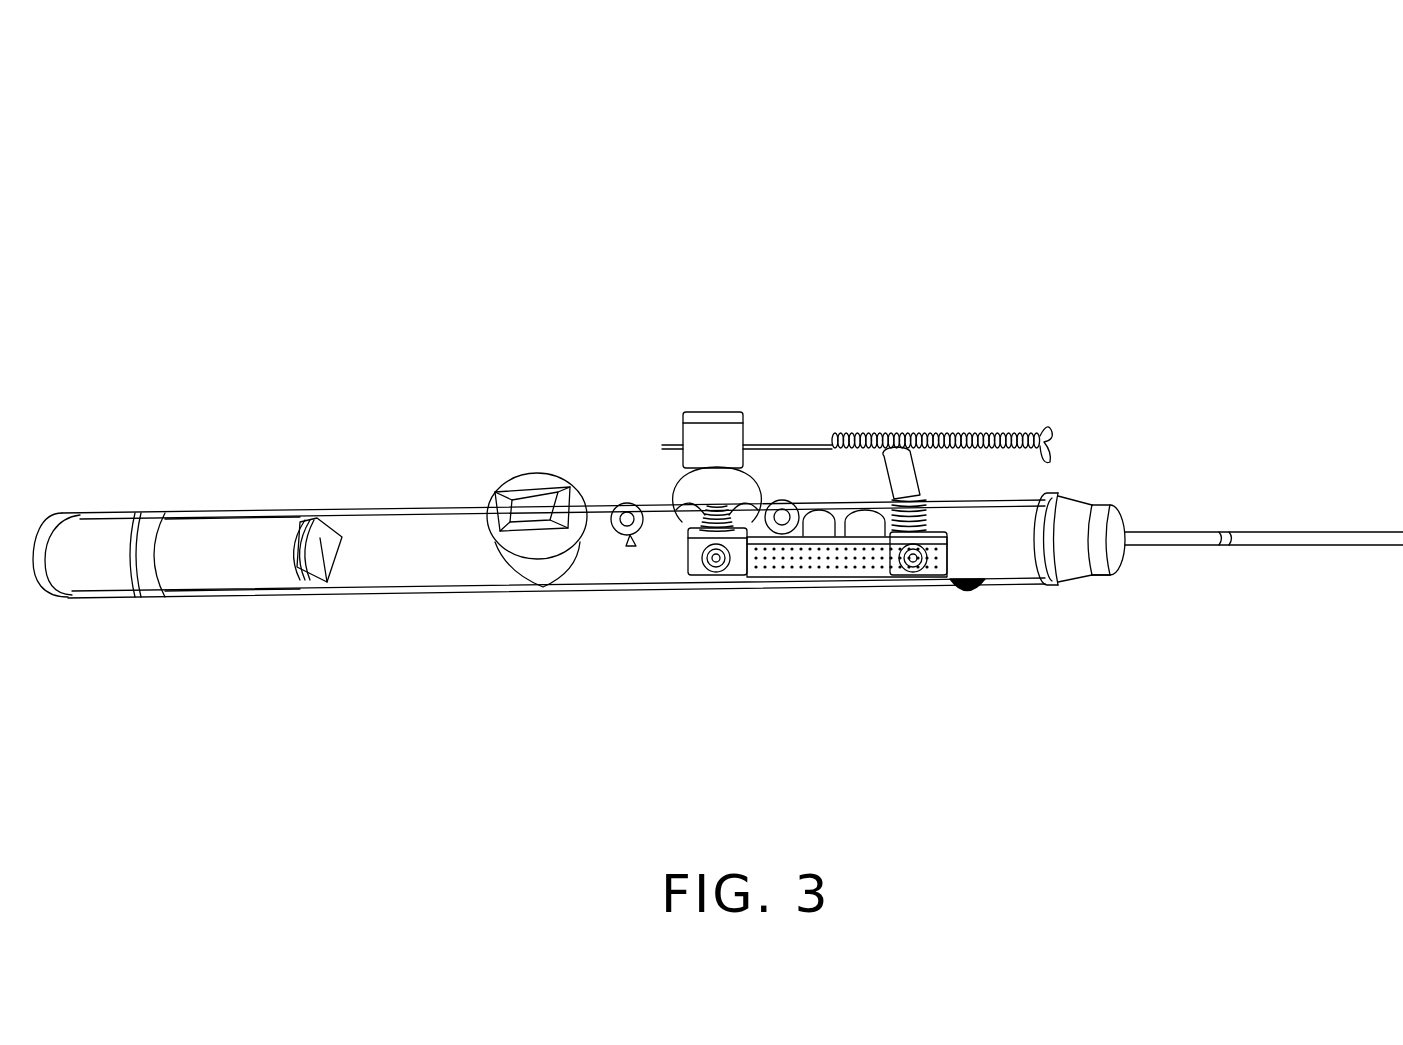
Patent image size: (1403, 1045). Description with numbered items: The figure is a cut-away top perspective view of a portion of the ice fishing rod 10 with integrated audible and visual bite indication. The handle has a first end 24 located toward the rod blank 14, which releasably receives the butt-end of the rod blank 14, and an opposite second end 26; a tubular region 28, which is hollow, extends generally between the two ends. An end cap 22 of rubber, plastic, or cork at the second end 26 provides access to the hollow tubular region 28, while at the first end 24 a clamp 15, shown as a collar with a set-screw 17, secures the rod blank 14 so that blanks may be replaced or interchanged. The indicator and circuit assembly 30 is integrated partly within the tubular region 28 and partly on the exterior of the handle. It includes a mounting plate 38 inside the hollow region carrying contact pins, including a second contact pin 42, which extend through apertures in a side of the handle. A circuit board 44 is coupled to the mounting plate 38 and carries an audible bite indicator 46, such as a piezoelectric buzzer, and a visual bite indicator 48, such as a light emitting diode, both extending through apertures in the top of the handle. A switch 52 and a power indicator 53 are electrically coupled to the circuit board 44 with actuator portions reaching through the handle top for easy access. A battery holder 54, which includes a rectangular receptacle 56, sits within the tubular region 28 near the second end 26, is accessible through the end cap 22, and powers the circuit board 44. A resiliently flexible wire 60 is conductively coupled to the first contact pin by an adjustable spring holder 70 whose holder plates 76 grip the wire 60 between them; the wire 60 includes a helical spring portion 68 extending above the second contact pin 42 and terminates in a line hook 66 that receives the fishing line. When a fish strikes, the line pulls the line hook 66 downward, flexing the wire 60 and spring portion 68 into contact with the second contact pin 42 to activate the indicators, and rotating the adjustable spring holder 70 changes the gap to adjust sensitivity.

The ice fishing rod 10 is at (1226, 103).
The rod blank 14 is at (1266, 530).
The clamp 15 is at (1097, 577).
The set-screw 17 is at (968, 598).
The end cap 22 is at (45, 577).
The first end 24 is at (1232, 423).
The second end 26 is at (133, 447).
The tubular region 28 is at (398, 594).
The indicator and circuit assembly 30 is at (982, 270).
The mounting plate 38 is at (690, 543).
The second contact pin 42 is at (912, 473).
The circuit board 44 is at (830, 578).
The audible bite indicator 46 is at (855, 510).
The visual bite indicator 48 is at (779, 505).
The switch 52 is at (533, 467).
The power indicator 53 is at (626, 503).
The battery holder 54 is at (320, 538).
The rectangular receptacle 56 is at (226, 540).
The resiliently flexible wire 60 is at (809, 444).
The line hook 66 is at (1046, 428).
The spring portion 68 is at (961, 422).
The adjustable spring holder 70 is at (655, 405).
The holder plates 76 is at (708, 414).